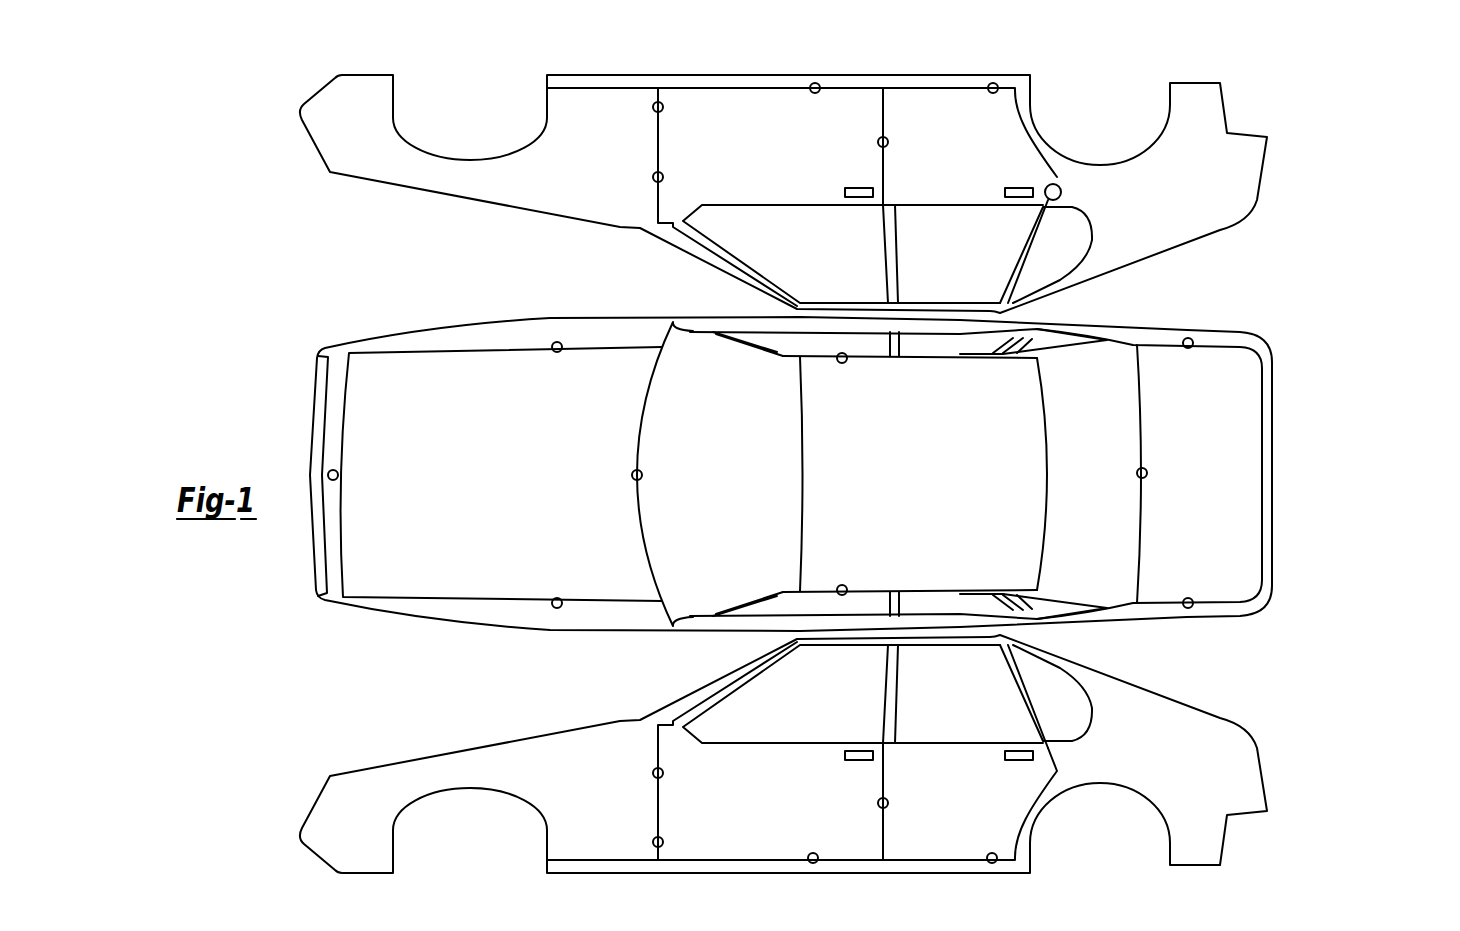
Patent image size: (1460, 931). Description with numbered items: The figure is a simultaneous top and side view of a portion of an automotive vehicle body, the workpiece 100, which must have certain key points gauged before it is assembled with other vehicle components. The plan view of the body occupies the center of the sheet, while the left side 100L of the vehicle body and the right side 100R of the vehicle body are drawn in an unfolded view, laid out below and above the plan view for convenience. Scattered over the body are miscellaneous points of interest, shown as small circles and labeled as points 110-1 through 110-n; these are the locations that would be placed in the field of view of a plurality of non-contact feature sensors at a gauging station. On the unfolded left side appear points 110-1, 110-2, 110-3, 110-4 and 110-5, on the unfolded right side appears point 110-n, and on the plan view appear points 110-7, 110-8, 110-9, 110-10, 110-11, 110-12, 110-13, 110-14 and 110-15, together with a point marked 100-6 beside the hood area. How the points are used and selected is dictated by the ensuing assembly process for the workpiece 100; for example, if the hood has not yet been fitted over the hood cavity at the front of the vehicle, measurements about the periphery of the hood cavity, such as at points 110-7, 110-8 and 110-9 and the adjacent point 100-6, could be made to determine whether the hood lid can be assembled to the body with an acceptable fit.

The workpiece 100 is at (310, 308).
The right side of the vehicle body 100R is at (298, 202).
The left side of the vehicle body 100L is at (326, 766).
The sensor 100-6 is at (556, 608).
The point of interest 110-1 is at (662, 776).
The point of interest 110-2 is at (653, 841).
The point of interest 110-3 is at (816, 857).
The point of interest 110-4 is at (888, 803).
The point of interest 110-5 is at (993, 863).
The point of interest 110-7 is at (337, 479).
The point of interest 110-8 is at (557, 352).
The point of interest 110-9 is at (642, 477).
The point of interest 110-10 is at (842, 364).
The point of interest 110-11 is at (845, 585).
The point of interest 110-12 is at (1146, 473).
The point of interest 110-13 is at (1190, 608).
The point of interest 110-14 is at (1275, 475).
The point of interest 110-15 is at (1190, 338).
The point of interest 110-n is at (993, 83).